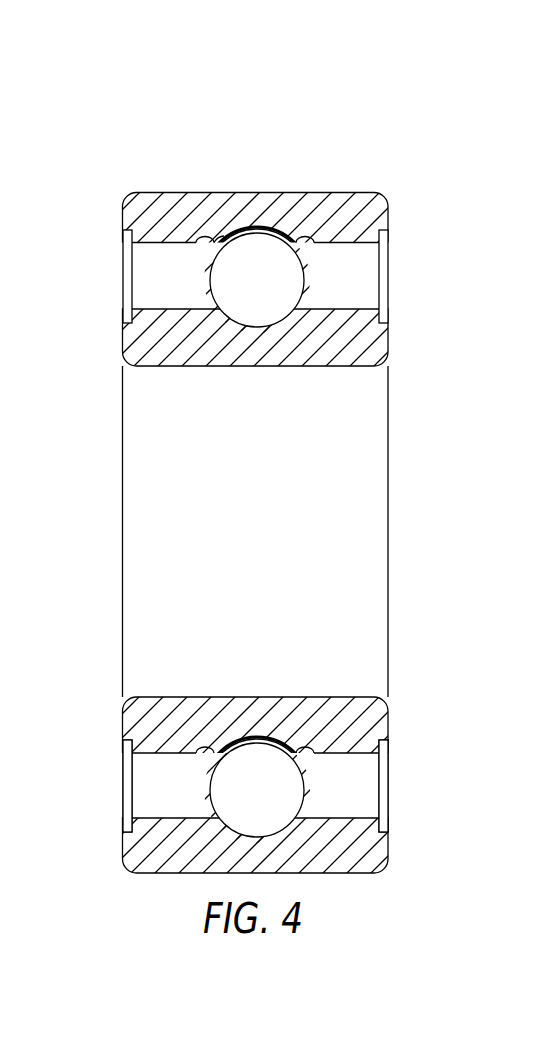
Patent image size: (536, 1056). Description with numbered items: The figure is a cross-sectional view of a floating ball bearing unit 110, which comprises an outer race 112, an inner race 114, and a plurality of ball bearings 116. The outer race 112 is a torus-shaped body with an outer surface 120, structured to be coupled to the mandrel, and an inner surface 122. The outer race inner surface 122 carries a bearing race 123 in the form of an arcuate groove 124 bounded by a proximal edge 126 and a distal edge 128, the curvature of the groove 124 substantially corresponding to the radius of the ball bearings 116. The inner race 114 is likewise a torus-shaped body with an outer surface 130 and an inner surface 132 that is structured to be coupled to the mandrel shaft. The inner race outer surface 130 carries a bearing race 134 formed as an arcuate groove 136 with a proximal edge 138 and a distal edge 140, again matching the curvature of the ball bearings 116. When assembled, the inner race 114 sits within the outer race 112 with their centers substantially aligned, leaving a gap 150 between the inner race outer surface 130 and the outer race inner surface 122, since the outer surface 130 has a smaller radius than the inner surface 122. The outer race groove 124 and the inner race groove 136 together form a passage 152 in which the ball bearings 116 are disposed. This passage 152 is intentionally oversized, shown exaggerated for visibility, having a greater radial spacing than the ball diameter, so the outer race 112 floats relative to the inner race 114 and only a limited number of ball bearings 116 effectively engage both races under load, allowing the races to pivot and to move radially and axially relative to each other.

The floating ball bearing unit 110 is at (158, 94).
The outer race 112 is at (268, 509).
The inner race 114 is at (390, 342).
The ball bearings 116 is at (292, 273).
The outer race outer surface 120 is at (175, 192).
The outer race inner surface 122 is at (151, 246).
The bearing race 123 is at (275, 228).
The outer race groove 124 is at (287, 228).
The proximal edge 126 is at (196, 243).
The distal edge 128 is at (311, 243).
The inner race outer surface 130 is at (137, 758).
The inner race inner surface 132 is at (170, 696).
The bearing race 134 is at (240, 736).
The inner race groove 136 is at (277, 733).
The proximal edge 138 is at (218, 757).
The distal edge 140 is at (303, 758).
The gap 150 is at (140, 297).
The passage 152 is at (247, 228).